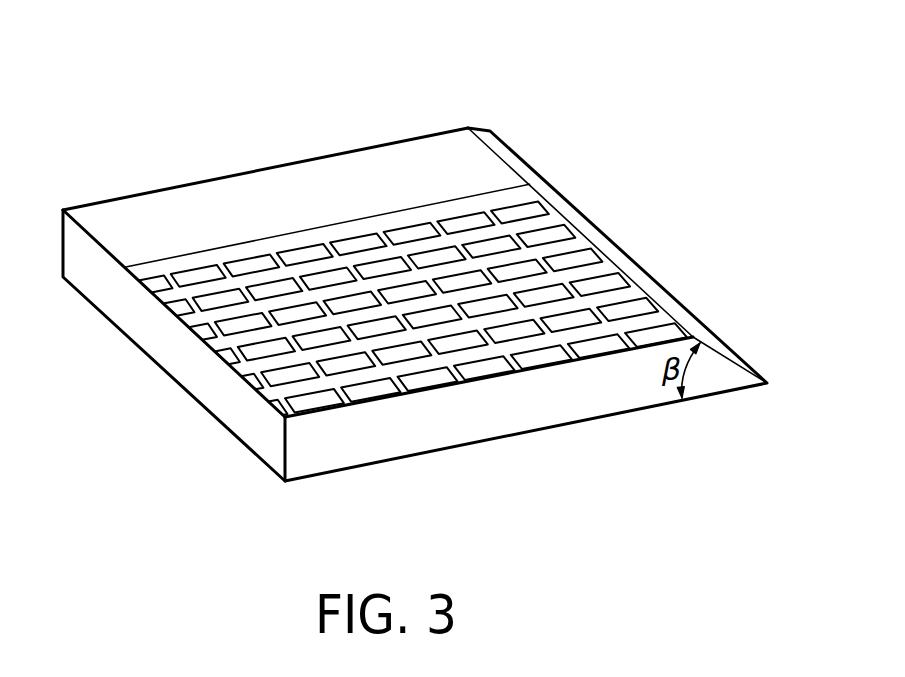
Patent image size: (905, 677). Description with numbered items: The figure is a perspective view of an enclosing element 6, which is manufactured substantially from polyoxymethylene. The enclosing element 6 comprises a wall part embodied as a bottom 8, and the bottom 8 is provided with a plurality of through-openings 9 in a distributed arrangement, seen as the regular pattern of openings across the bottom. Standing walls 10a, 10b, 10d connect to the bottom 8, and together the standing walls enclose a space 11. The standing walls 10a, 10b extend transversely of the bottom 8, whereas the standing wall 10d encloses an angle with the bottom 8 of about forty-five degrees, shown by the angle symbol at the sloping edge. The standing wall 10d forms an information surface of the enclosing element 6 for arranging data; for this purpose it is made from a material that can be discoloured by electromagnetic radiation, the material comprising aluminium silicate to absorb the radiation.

The enclosing element 6 is at (633, 113).
The bottom 8 is at (340, 233).
The through-openings 9 is at (253, 262).
The standing wall 10a is at (282, 203).
The standing wall 10b is at (163, 352).
The standing wall 10d is at (622, 260).
The space 11 is at (166, 229).